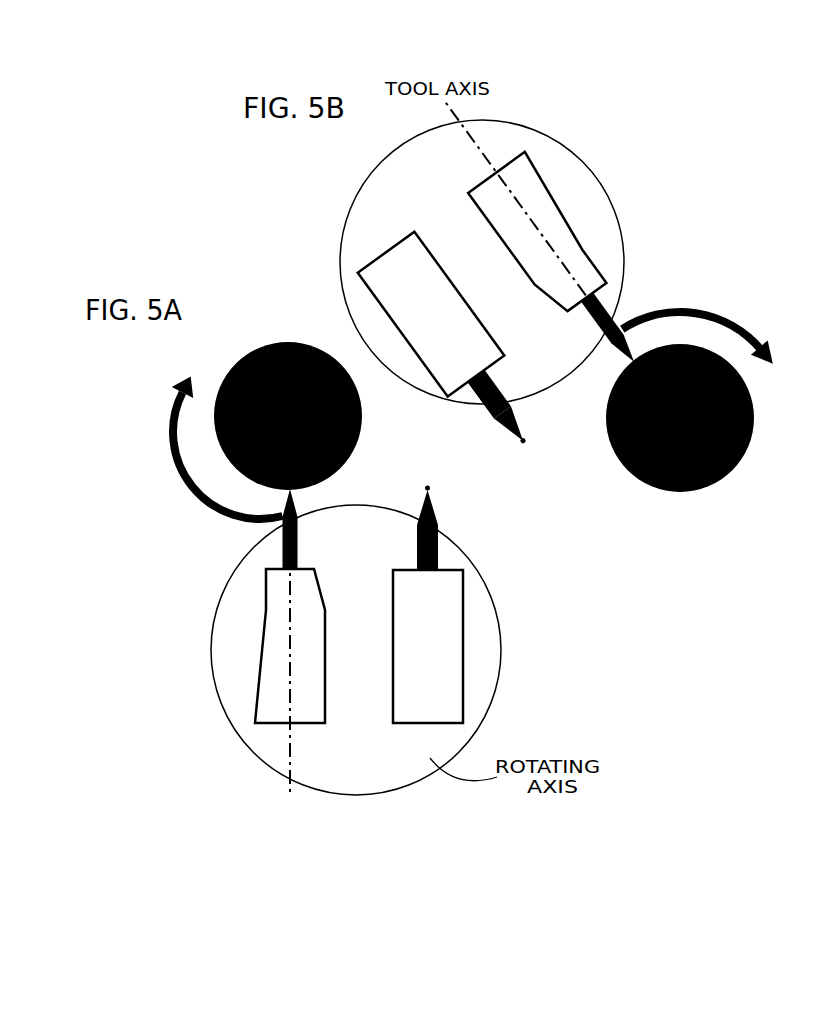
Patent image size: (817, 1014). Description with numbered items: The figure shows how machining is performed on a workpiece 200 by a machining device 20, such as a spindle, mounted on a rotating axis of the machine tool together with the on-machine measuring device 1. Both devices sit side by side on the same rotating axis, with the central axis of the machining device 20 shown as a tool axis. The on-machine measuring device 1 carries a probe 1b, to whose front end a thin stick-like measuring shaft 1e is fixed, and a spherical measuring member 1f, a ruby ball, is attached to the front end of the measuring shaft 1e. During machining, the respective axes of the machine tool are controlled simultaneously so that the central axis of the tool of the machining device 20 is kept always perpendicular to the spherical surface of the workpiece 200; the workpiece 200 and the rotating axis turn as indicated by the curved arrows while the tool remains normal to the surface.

In FIG. 5A, the on-machine measuring device 1 is at (443, 592).
In FIG. 5B, the on-machine measuring device 1 is at (408, 228).
In FIG. 5A, the probe 1b is at (438, 548).
In FIG. 5B, the probe 1b is at (482, 402).
In FIG. 5A, the measuring shaft 1e is at (433, 513).
In FIG. 5B, the measuring shaft 1e is at (512, 428).
In FIG. 5A, the spherical measuring member 1f is at (428, 486).
In FIG. 5B, the spherical measuring member 1f is at (525, 442).
In FIG. 5A, the machining device 20 is at (268, 590).
In FIG. 5B, the machining device 20 is at (547, 183).
In FIG. 5B, the workpiece 200 is at (677, 492).